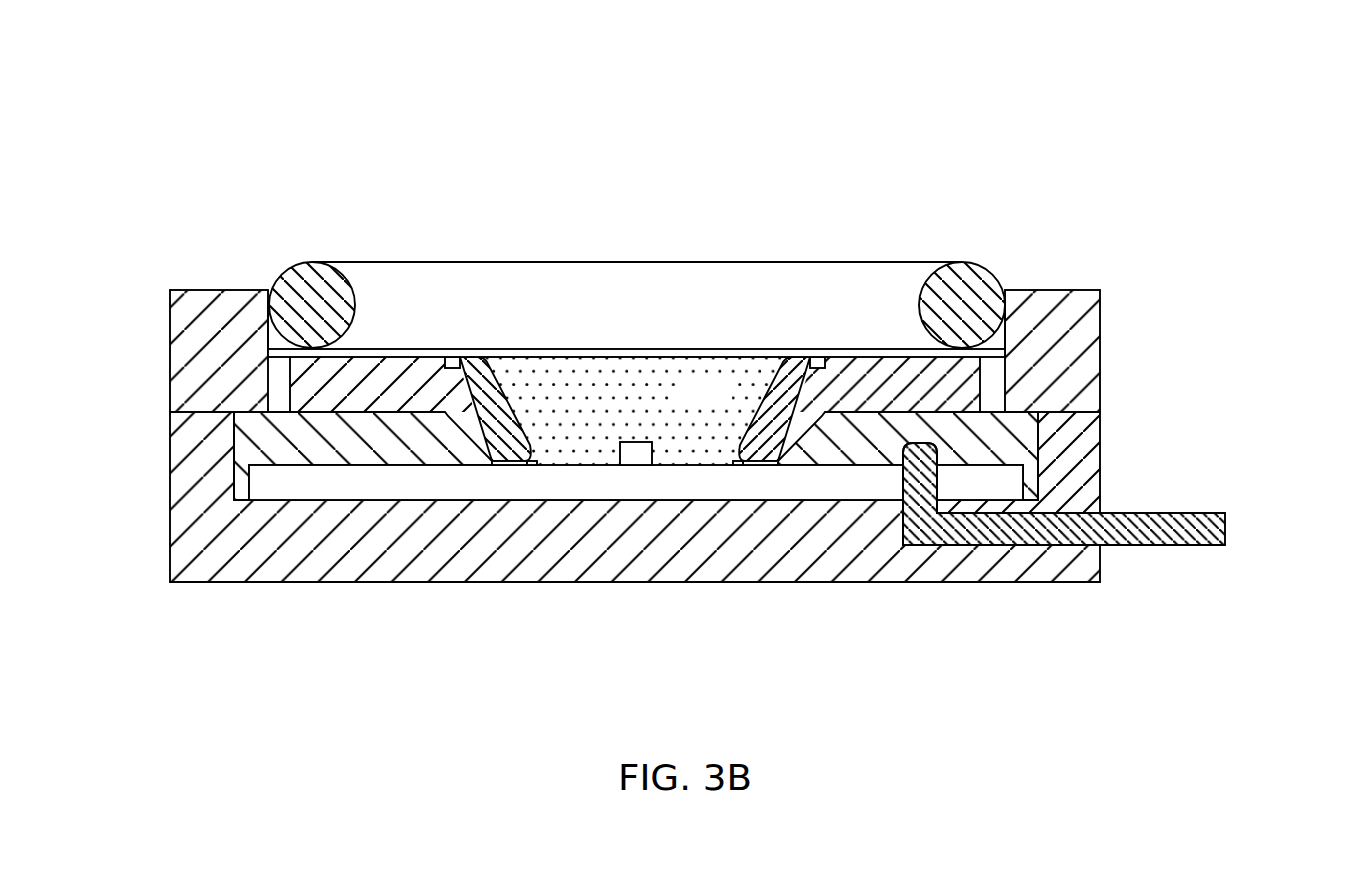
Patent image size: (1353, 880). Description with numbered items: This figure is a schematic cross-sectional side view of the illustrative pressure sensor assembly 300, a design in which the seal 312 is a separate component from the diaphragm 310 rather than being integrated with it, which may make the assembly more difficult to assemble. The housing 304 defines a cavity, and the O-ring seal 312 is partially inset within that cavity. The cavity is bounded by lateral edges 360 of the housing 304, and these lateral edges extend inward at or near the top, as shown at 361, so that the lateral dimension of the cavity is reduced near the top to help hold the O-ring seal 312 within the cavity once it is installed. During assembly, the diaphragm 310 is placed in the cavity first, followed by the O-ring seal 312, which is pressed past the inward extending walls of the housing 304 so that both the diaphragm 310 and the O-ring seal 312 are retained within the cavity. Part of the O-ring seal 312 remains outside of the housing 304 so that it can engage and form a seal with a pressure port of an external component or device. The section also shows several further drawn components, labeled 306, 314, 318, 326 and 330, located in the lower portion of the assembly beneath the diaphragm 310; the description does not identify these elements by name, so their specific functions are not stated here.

The pressure sensor assembly 300 is at (821, 76).
The housing 304 is at (1130, 393).
The die 306 is at (636, 455).
The diaphragm 310 is at (629, 357).
The O-ring seal 312 is at (933, 262).
The encapsulant 314 is at (727, 405).
The lead 318 is at (1212, 532).
The base 326 is at (1093, 475).
The substrate 330 is at (777, 480).
The lateral edges 360 is at (276, 329).
The inward extending top portion of lateral edges 361 is at (268, 322).